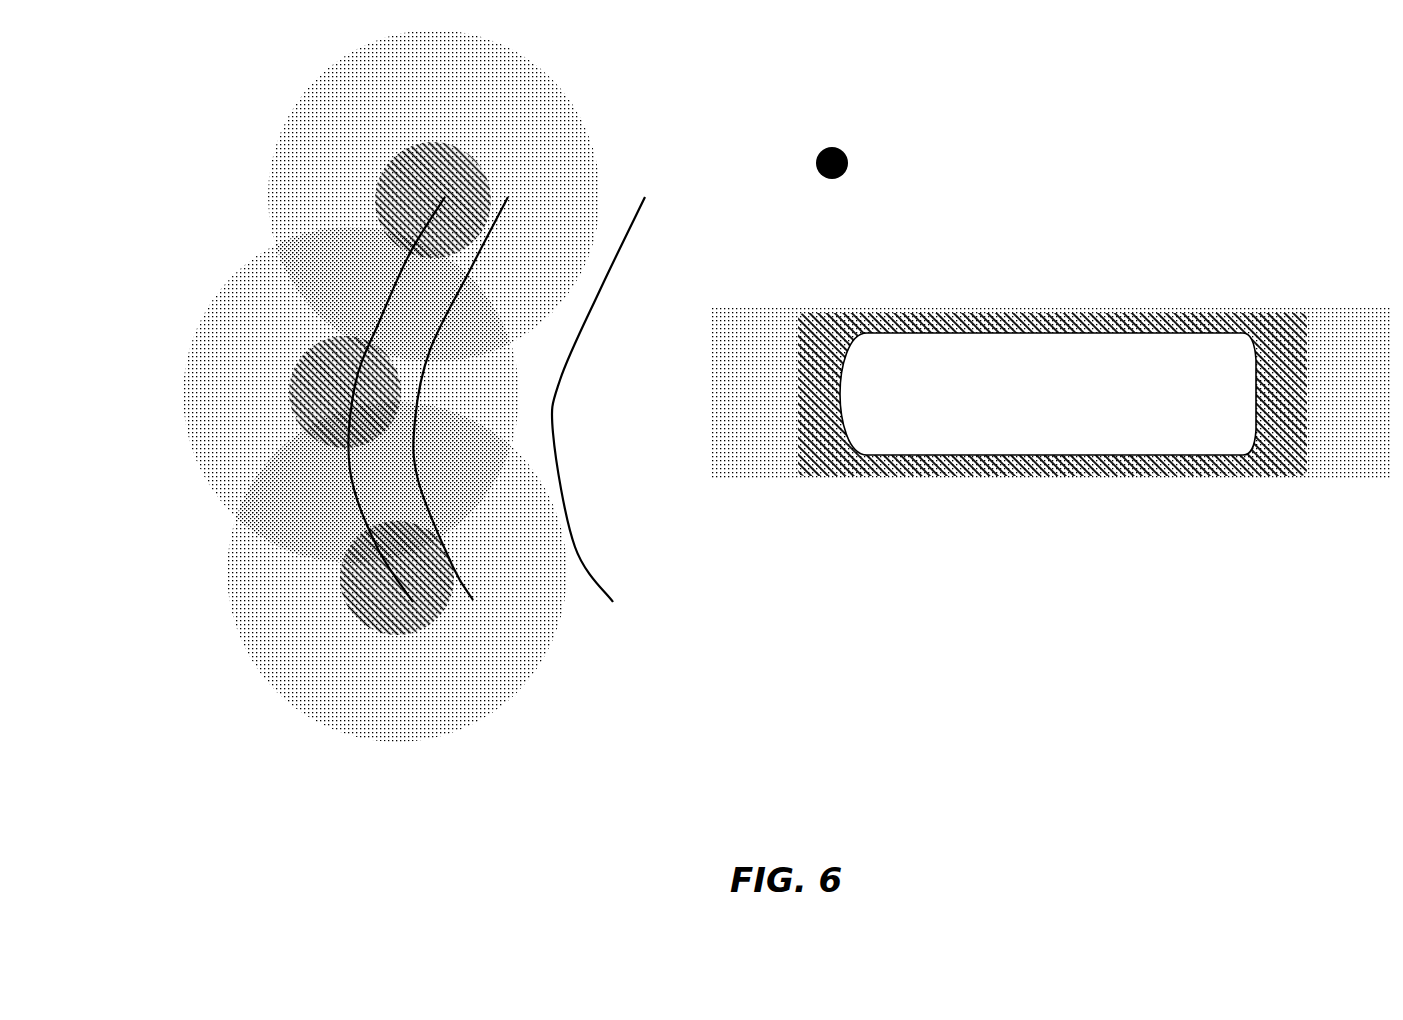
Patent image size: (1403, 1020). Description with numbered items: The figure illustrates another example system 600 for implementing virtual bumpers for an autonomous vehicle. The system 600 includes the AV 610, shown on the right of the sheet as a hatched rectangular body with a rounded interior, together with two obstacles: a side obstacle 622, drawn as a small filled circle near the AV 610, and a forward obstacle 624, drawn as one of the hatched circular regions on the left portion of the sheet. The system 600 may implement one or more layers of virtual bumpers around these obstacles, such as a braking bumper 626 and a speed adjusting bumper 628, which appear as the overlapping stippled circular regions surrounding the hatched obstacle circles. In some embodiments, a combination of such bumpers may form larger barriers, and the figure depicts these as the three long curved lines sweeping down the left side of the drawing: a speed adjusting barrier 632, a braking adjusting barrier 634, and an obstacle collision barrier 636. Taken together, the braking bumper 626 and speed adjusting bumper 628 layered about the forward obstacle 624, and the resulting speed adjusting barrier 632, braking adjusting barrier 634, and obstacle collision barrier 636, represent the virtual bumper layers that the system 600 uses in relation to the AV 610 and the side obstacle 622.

The system 600 is at (1052, 253).
The AV 610 is at (1293, 306).
The side obstacle 622 is at (862, 163).
The forward obstacle 624 is at (340, 575).
The braking bumper 626 is at (322, 605).
The speed adjusting bumper 628 is at (540, 705).
The speed adjusting barrier 632 is at (588, 549).
The braking adjusting barrier 634 is at (478, 590).
The obstacle collision barrier 636 is at (345, 318).